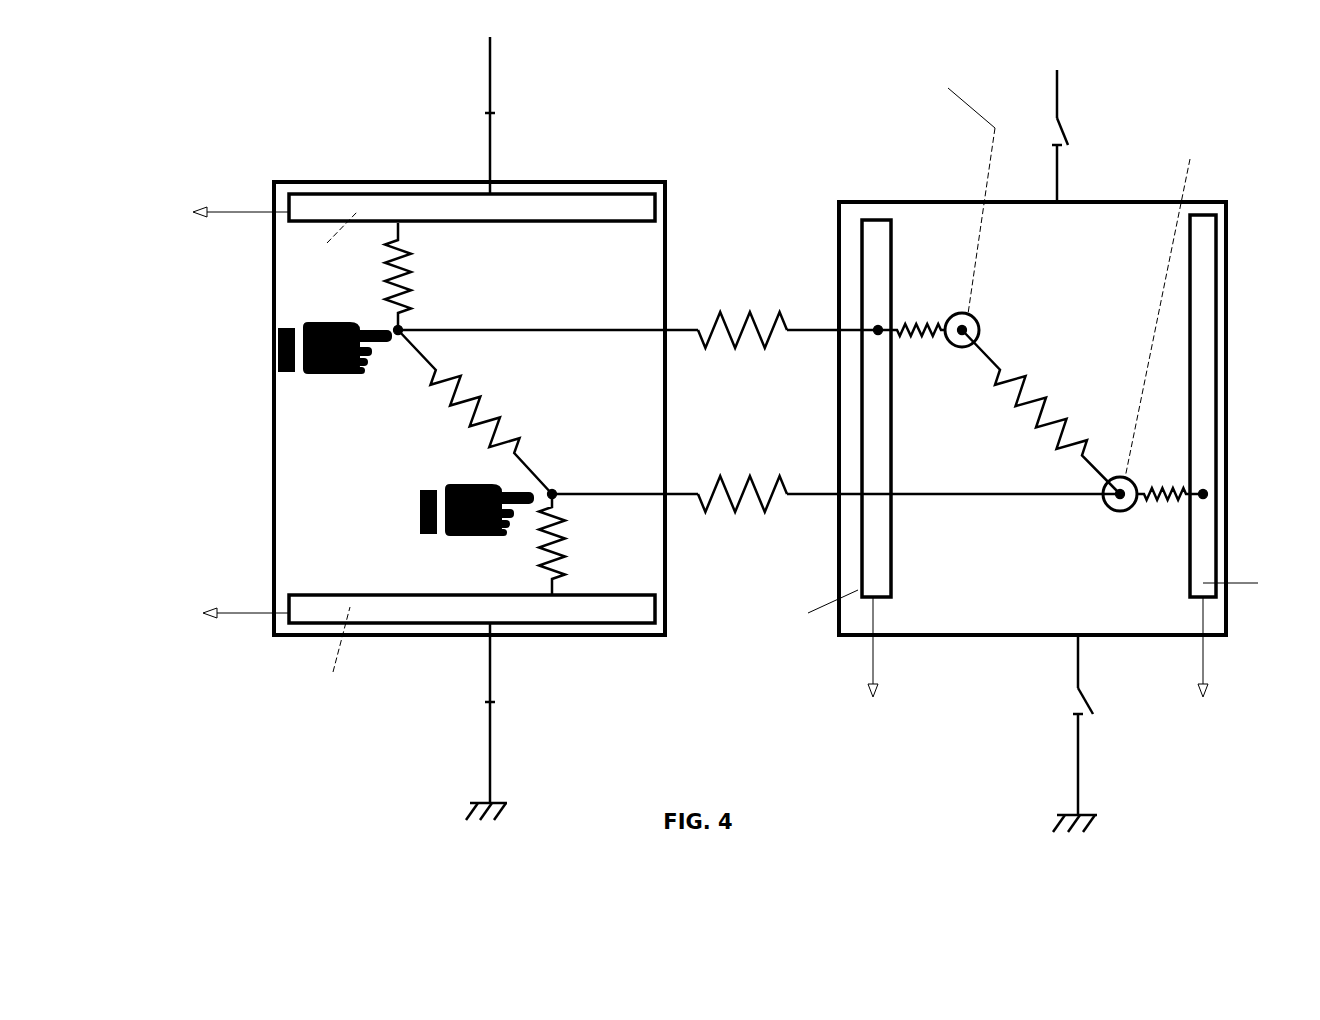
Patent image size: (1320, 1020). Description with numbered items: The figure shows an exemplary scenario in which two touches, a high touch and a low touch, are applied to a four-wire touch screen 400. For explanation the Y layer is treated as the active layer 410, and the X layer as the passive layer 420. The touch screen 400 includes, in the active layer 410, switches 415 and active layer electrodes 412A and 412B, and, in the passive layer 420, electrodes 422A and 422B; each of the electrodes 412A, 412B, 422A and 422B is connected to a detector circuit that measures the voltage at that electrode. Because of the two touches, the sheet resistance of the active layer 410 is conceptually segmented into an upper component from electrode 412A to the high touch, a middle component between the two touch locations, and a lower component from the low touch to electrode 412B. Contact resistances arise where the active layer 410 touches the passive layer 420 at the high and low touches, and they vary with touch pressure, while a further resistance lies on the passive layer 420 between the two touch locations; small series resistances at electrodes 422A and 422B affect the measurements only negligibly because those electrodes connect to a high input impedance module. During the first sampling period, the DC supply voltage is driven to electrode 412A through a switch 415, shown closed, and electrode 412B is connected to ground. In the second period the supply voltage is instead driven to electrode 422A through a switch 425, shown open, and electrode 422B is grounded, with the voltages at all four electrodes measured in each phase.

The 4-wire touch screen 400 is at (209, 84).
The active layer 410 is at (296, 443).
The active layer electrode 412A is at (472, 207).
The active layer electrode 412B is at (472, 609).
The switch 415 is at (520, 94).
The passive layer 420 is at (963, 631).
The passive layer electrode 422A is at (876, 408).
The passive layer electrode 422B is at (1203, 406).
The switch 425 is at (1053, 442).